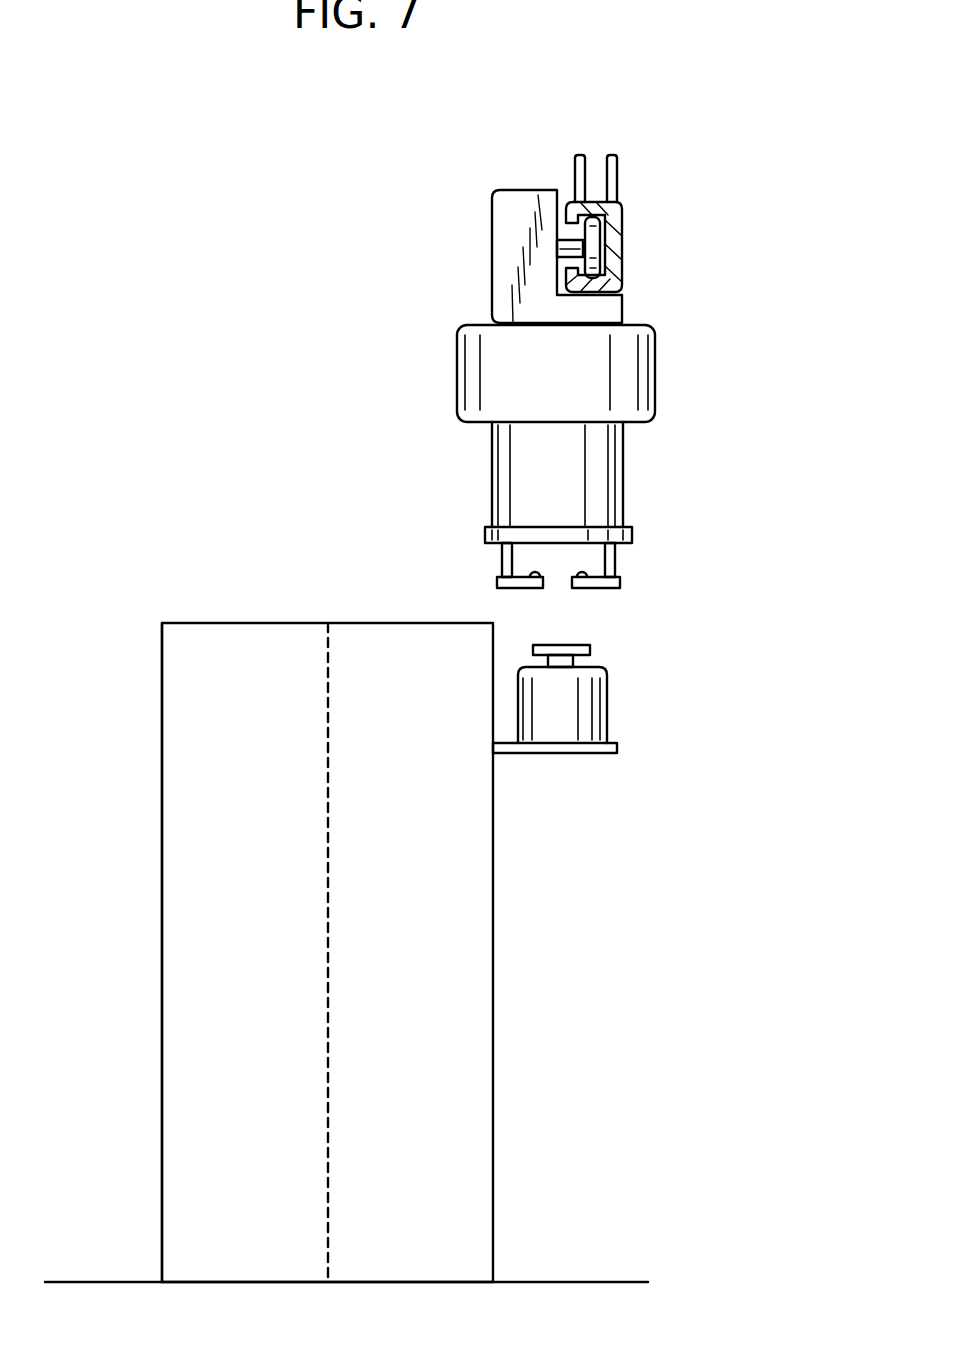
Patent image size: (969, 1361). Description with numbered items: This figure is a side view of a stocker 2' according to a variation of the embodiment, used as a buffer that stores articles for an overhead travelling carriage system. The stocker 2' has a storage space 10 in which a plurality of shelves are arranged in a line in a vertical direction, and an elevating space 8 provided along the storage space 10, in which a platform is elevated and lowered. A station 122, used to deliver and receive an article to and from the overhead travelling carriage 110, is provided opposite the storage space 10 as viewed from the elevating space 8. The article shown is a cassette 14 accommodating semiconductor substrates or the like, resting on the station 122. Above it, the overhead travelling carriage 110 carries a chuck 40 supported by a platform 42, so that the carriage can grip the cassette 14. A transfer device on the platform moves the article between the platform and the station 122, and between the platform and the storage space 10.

The stocker 2' is at (246, 381).
The elevating space 8 is at (444, 1143).
The storage space 10 is at (187, 1147).
The cassette 14 is at (590, 700).
The chuck 40 is at (527, 589).
The platform 42 is at (623, 483).
The overhead travelling carriage 110 is at (676, 382).
The station 122 is at (590, 754).